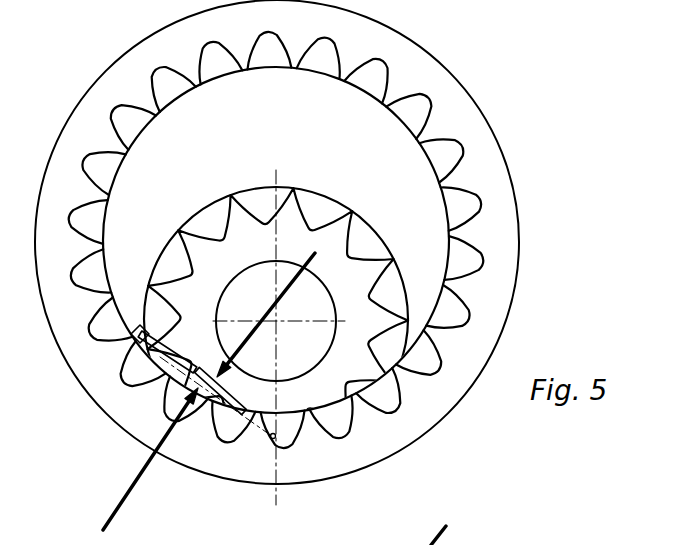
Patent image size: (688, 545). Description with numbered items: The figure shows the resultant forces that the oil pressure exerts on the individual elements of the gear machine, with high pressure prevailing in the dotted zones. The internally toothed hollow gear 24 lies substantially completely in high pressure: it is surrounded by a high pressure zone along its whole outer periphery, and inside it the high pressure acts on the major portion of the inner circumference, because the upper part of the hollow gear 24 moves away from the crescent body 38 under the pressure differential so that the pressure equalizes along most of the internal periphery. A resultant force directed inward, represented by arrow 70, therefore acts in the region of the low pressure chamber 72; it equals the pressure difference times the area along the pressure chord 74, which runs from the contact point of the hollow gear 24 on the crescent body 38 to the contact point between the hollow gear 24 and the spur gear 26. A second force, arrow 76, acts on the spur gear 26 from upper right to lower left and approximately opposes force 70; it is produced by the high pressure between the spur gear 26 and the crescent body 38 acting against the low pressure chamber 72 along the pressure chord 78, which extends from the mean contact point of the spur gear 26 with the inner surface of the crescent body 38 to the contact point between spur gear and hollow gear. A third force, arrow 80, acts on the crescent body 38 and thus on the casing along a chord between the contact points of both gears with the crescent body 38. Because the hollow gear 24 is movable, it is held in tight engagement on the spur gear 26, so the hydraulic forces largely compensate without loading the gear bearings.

The hollow gear 24 is at (480, 139).
The crescent body 38 is at (276, 240).
The spur gear 26 is at (380, 268).
The arrow representing resultant force on hollow gear 70 is at (147, 472).
The low pressure chamber 72 is at (125, 386).
The pressure chord 74 is at (212, 401).
The arrow representing force on spur gear 76 is at (291, 276).
The pressure chord 78 is at (165, 347).
The arrow representing force on crescent body 80 is at (134, 318).